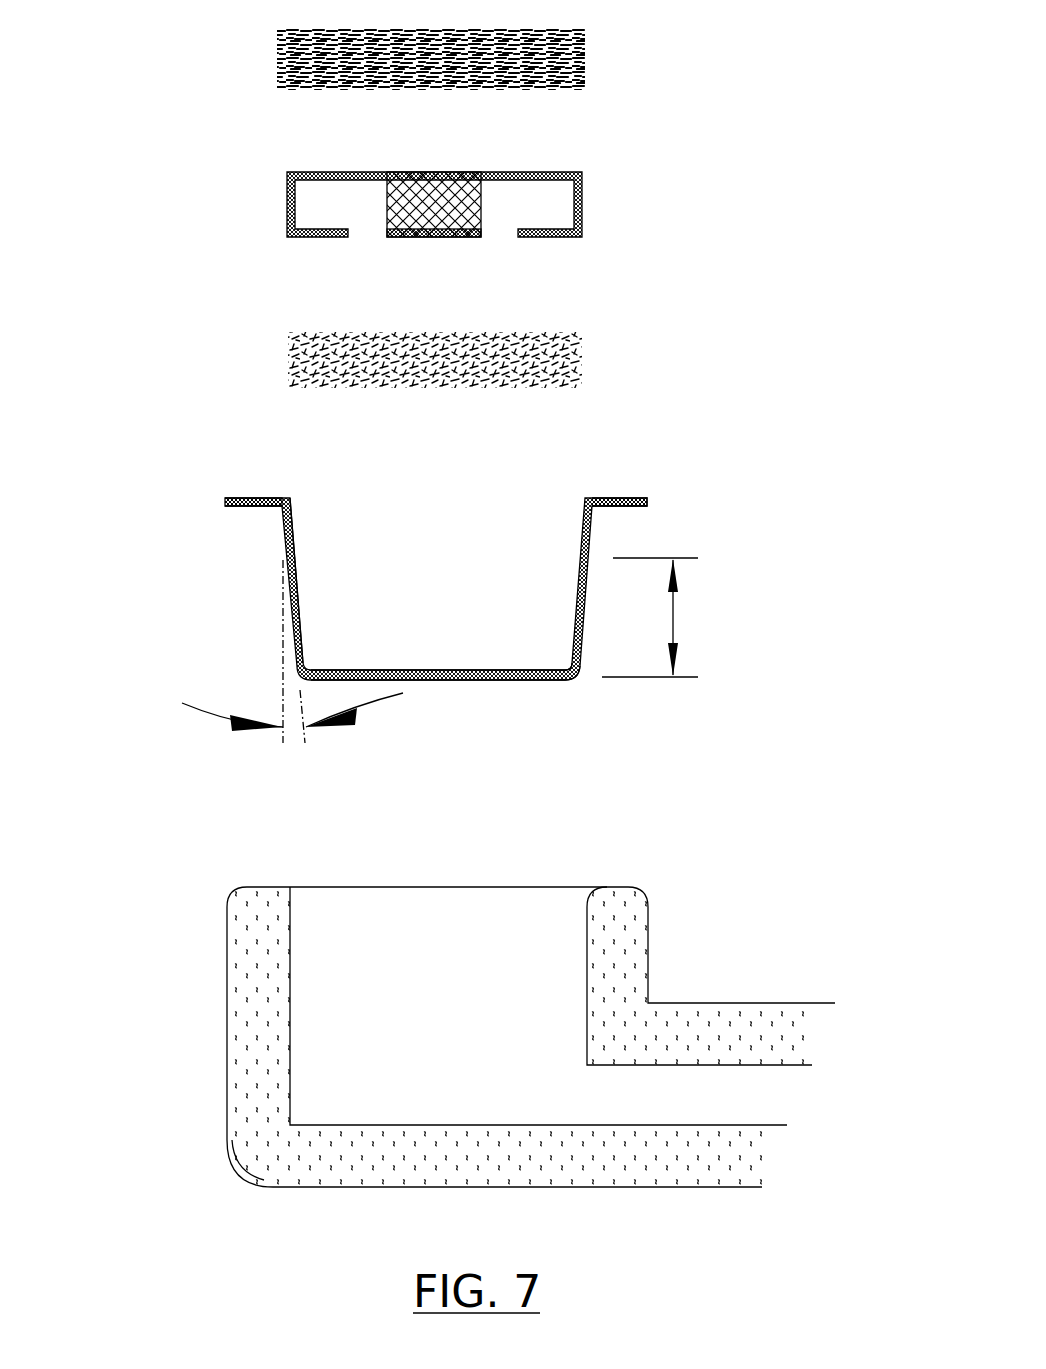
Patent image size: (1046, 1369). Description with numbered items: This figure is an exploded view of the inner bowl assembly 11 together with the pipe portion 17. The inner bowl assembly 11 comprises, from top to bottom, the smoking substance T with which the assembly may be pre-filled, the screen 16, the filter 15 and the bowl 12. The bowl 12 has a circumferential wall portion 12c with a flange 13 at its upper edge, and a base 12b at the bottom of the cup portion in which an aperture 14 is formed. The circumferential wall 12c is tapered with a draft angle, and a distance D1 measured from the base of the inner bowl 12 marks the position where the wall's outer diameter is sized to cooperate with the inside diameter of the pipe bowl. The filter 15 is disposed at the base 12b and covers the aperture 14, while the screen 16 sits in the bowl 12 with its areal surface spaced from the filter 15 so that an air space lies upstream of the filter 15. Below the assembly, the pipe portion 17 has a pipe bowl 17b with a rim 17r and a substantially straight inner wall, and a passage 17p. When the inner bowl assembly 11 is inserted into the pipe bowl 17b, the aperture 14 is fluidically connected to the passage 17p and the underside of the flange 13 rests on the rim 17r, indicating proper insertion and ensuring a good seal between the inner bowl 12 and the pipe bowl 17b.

The inner bowl assembly 11 is at (402, 584).
The bowl 12 is at (592, 535).
The base 12b is at (532, 677).
The circumferential wall portion 12c is at (365, 573).
The flange 13 is at (627, 500).
The aperture 14 is at (453, 678).
The filter 15 is at (570, 365).
The screen 16 is at (583, 204).
The pipe portion 17 is at (457, 1024).
The pipe bowl 17b is at (355, 980).
The rim 17r is at (257, 887).
The passage 17p is at (643, 1105).
The smoking substance T is at (552, 68).
The distance D1 is at (672, 617).